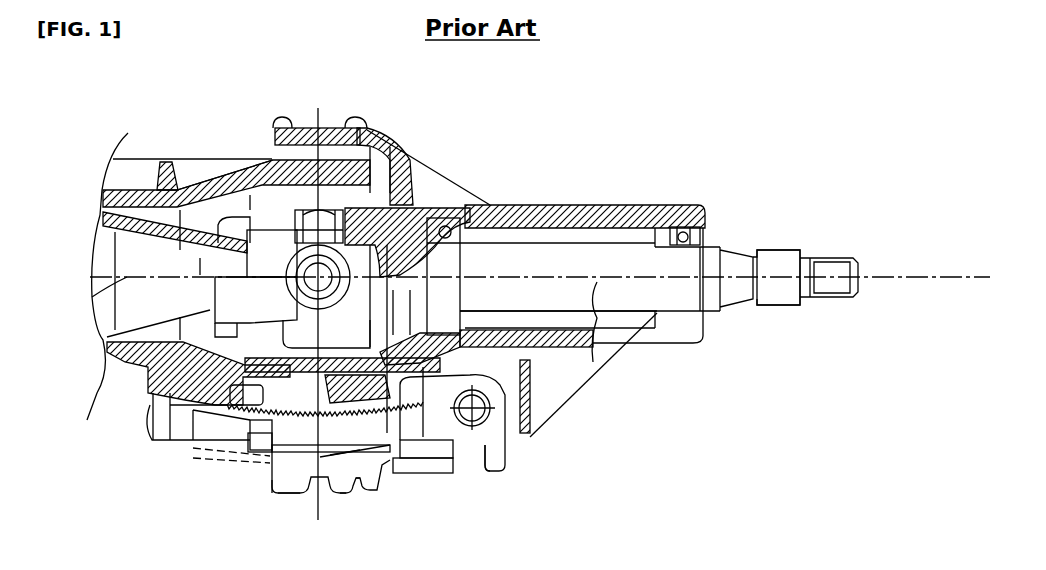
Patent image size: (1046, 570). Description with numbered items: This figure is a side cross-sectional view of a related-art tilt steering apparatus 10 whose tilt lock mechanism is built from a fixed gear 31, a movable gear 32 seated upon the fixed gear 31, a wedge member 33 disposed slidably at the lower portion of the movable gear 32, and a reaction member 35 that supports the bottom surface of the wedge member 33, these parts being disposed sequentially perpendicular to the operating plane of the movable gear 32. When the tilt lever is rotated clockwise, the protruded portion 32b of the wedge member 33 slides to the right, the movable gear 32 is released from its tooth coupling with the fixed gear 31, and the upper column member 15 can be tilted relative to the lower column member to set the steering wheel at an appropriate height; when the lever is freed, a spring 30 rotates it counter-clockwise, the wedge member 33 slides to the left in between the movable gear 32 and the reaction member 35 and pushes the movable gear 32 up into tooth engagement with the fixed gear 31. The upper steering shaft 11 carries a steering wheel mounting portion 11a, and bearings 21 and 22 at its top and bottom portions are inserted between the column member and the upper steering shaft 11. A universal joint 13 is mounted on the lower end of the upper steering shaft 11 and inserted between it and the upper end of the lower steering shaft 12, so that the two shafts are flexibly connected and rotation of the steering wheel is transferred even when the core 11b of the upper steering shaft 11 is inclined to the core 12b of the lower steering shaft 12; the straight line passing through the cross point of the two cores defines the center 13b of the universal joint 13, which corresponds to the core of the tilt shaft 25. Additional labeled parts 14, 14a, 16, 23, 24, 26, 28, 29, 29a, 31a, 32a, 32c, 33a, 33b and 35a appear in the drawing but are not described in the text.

The steering apparatus 10 is at (404, 85).
The upper steering shaft 11 is at (567, 253).
The steering wheel mounting portion 11a is at (778, 250).
The core of the upper steering shaft 11b is at (618, 281).
The lower steering shaft 12 is at (103, 229).
The core of the lower steering shaft 12b is at (92, 298).
The universal joint 13 is at (318, 208).
The center of the universal joint 13b is at (307, 290).
The rack housing 14 is at (412, 178).
The housing bracket 14a is at (513, 440).
The upper column member 15 is at (212, 178).
The retaining plate 16 is at (419, 478).
The bearing 21 is at (684, 226).
The bearing 22 is at (462, 218).
The rack housing tube 23 is at (533, 205).
The mounting flange 24 is at (330, 128).
The tilt shaft 25 is at (304, 270).
The mounting hole 26 is at (481, 398).
The housing outer wall 28 is at (130, 193).
The partition wall 29 is at (272, 160).
The lower housing wall 29a is at (273, 373).
The spring 30 is at (215, 458).
The fixed gear 31 is at (267, 386).
The gear arm 31a is at (262, 420).
The movable gear 32 is at (425, 470).
The bracket upper portion 32a is at (283, 430).
The protruded portion 32b is at (275, 481).
The bracket right end 32c is at (493, 463).
The wedge member 33 is at (432, 474).
The plate lobe 33a is at (365, 490).
The plate upper edge 33b is at (328, 453).
The reaction member 35 is at (305, 493).
The pawl tooth 35a is at (338, 495).